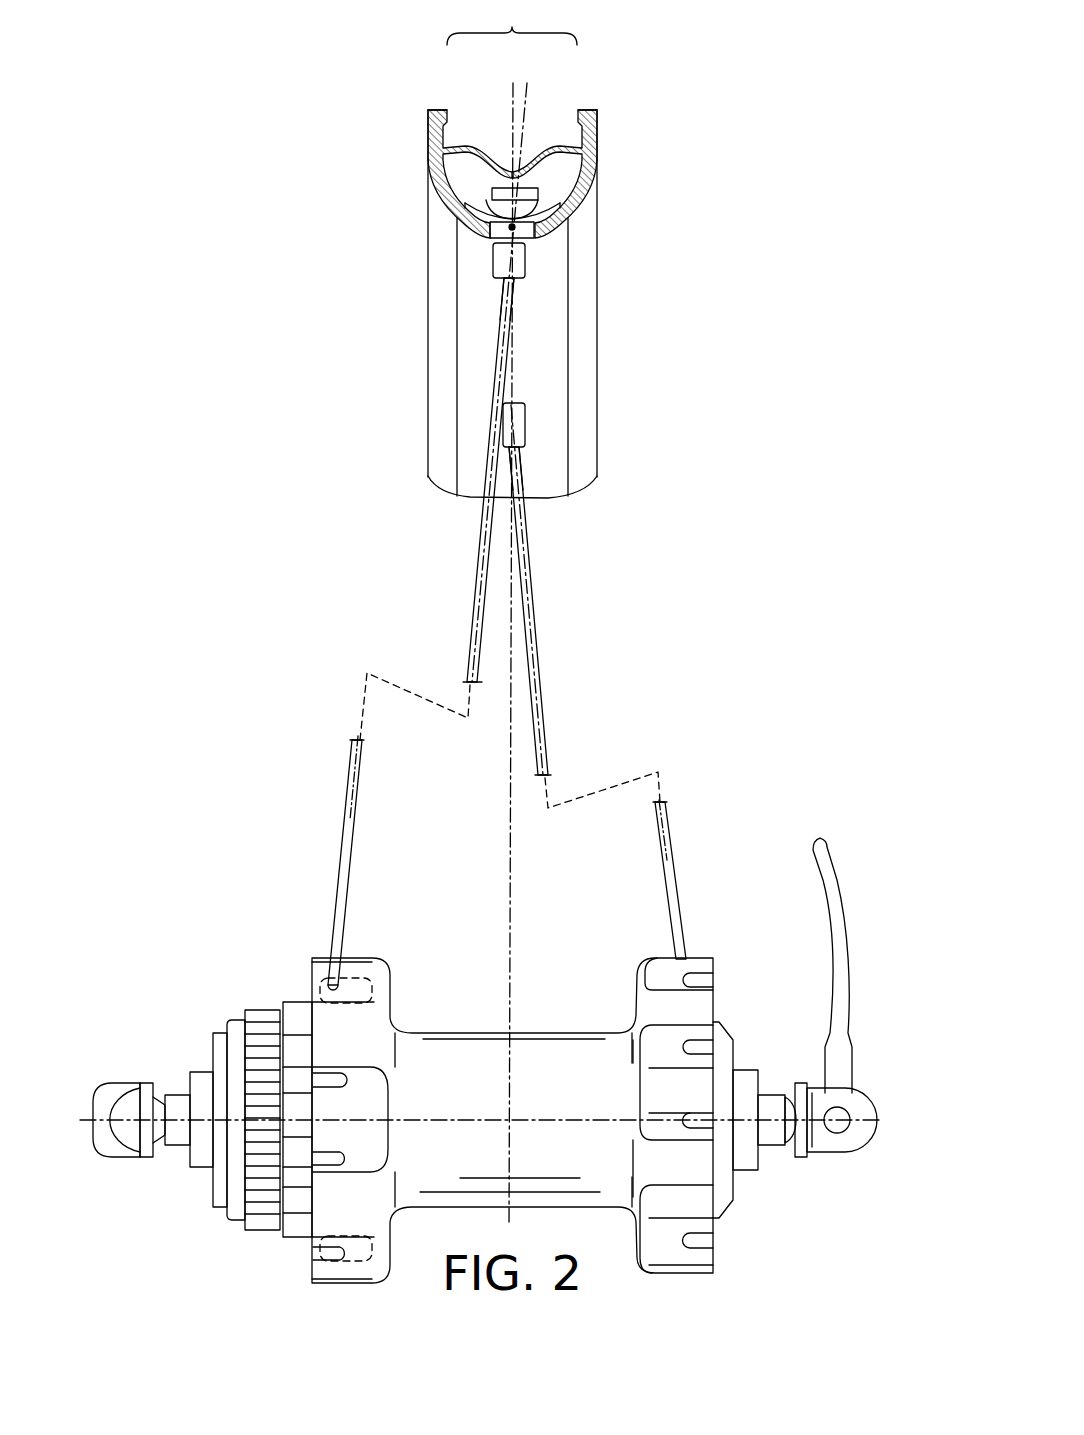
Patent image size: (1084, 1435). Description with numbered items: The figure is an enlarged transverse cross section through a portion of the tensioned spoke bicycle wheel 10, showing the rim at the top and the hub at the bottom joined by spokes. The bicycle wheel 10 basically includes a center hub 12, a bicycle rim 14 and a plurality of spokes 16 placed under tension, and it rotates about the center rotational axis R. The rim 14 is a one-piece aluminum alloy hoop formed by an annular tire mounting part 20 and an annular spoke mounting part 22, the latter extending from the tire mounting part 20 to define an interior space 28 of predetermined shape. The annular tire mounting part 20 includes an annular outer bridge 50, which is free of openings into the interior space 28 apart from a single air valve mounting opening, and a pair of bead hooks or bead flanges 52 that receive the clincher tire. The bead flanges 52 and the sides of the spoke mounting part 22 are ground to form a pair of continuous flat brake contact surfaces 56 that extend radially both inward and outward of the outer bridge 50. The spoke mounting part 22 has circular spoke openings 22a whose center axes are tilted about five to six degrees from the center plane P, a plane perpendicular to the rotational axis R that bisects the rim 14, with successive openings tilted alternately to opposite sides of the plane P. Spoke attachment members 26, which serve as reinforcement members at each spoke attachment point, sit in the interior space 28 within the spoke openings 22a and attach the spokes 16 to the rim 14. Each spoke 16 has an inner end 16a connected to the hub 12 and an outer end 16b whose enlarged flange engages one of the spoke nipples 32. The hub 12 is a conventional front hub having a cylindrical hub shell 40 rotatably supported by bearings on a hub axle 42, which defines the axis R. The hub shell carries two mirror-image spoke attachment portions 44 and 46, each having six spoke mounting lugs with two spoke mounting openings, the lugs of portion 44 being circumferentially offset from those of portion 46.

The bicycle wheel 10 is at (746, 170).
The hub 12 is at (247, 990).
The bicycle rim 14 is at (335, 167).
The spokes 16 is at (486, 673).
The inner end 16a is at (332, 955).
The outer end 16b is at (497, 295).
The annular tire mounting part 20 is at (512, 23).
The annular spoke mounting part 22 is at (578, 213).
The spoke openings 22a is at (492, 240).
The spoke attachment members 26 is at (484, 196).
The interior space 28 is at (558, 180).
The spoke nipples 32 is at (527, 262).
The hub shell 40 is at (448, 1033).
The hub axle 42 is at (178, 1095).
The spoke attachment portion 44 is at (655, 957).
The spoke attachment portion 46 is at (360, 957).
The annular outer bridge 50 is at (496, 160).
The bead flanges 52 is at (443, 110).
The brake contact surfaces 56 is at (428, 140).
The center plane P is at (510, 858).
The center rotational axis R is at (570, 1118).